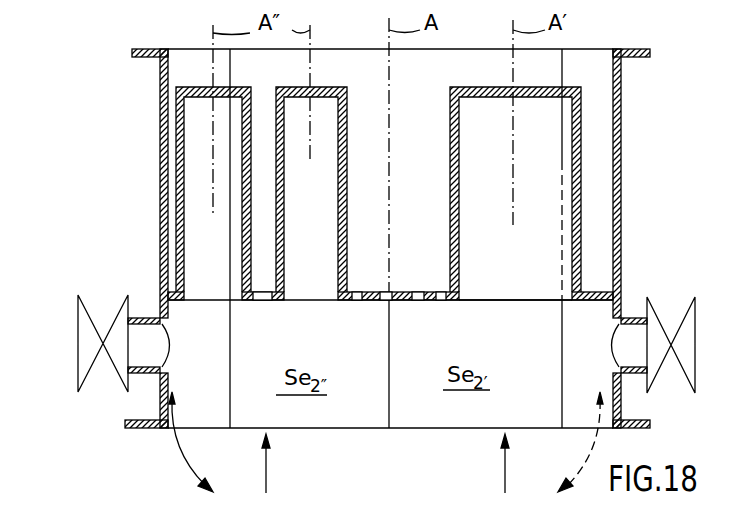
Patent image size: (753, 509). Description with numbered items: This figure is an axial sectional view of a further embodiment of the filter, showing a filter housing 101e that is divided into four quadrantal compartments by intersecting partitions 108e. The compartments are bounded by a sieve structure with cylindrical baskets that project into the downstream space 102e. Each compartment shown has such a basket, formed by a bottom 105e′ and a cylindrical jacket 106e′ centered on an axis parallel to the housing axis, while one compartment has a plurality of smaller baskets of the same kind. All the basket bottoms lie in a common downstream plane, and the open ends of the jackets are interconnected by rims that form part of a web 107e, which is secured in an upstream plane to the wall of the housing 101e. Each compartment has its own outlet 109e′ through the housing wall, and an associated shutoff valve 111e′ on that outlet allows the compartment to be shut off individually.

The filter housing 101e is at (622, 164).
The downstream space 102e is at (440, 183).
The basket bottom 105e′ is at (477, 88).
The basket jacket 106e′ is at (572, 200).
The web 107e is at (358, 304).
The partitions 108e is at (400, 415).
The compartment outlet 109e′ is at (627, 336).
The shutoff valve 111e′ is at (693, 306).